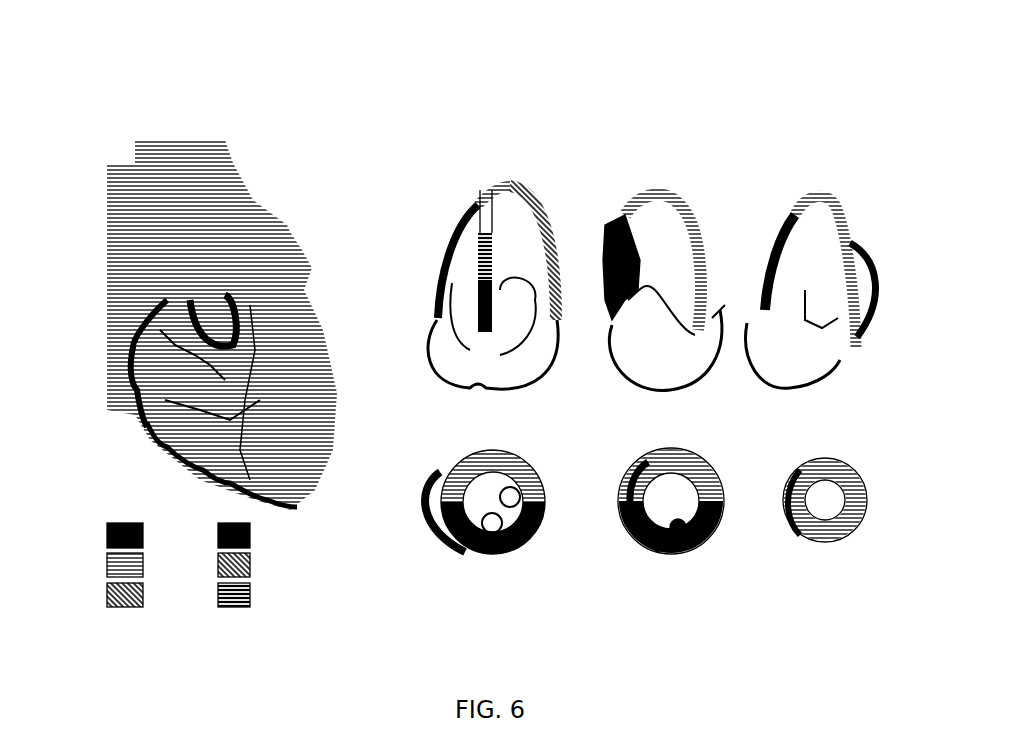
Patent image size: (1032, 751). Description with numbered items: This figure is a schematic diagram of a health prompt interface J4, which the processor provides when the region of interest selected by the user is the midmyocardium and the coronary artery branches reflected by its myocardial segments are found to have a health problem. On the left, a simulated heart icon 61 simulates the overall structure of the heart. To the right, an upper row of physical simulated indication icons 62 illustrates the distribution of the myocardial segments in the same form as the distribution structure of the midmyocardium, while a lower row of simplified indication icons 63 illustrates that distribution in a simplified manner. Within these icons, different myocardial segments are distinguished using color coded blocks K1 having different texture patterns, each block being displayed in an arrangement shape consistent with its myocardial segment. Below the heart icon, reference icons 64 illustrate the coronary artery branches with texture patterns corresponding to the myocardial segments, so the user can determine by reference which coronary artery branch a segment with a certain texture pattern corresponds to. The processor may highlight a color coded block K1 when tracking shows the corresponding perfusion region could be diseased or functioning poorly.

The simulated heart icon 61 is at (105, 293).
The physical simulated indication icons 62 is at (818, 195).
The simplified indication icons 63 is at (807, 537).
The reference icons 64 is at (121, 607).
The health prompt interface J4 is at (610, 66).
The color coded blocks K1 is at (838, 213).